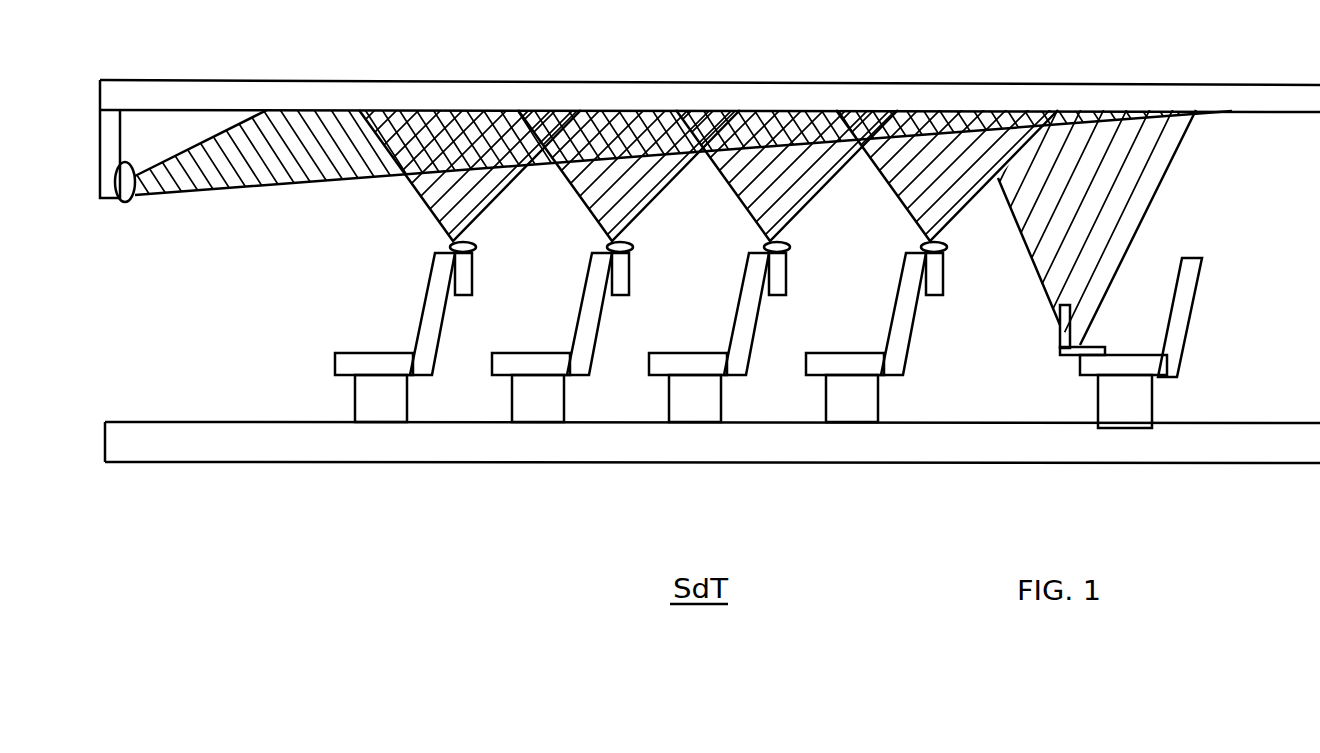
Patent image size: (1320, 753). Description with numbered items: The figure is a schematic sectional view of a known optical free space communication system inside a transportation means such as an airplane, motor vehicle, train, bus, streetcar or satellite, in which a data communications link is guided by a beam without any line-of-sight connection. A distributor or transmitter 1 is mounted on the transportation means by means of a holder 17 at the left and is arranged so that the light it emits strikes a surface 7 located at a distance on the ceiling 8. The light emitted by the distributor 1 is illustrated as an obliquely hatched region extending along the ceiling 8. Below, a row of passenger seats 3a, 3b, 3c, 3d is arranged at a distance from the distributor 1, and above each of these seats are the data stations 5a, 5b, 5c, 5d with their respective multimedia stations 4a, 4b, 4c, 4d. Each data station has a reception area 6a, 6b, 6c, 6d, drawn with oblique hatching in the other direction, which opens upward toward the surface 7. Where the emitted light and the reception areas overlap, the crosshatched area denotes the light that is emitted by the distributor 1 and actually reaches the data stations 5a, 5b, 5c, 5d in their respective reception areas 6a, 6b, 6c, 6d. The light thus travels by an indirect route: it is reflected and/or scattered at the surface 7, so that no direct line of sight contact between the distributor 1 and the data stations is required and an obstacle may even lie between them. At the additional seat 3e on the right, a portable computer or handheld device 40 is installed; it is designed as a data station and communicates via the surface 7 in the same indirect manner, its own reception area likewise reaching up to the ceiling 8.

The distributor 1 is at (126, 203).
The passenger seat 3a is at (348, 363).
The passenger seat 3b is at (505, 363).
The passenger seat 3c is at (663, 363).
The passenger seat 3d is at (820, 363).
The additional seat 3e is at (1168, 365).
The multimedia station 4a is at (466, 283).
The multimedia station 4b is at (623, 283).
The multimedia station 4c is at (780, 283).
The multimedia station 4d is at (937, 283).
The data station 5a is at (477, 247).
The data station 5b is at (634, 247).
The data station 5c is at (791, 247).
The data station 5d is at (948, 247).
The reception area 6a is at (445, 208).
The reception area 6b is at (597, 197).
The reception area 6c is at (758, 195).
The reception area 6d is at (920, 190).
The surface 7 is at (401, 122).
The ceiling 8 is at (681, 80).
The holder 17 is at (110, 125).
The portable computer or handheld device 40 is at (1060, 352).